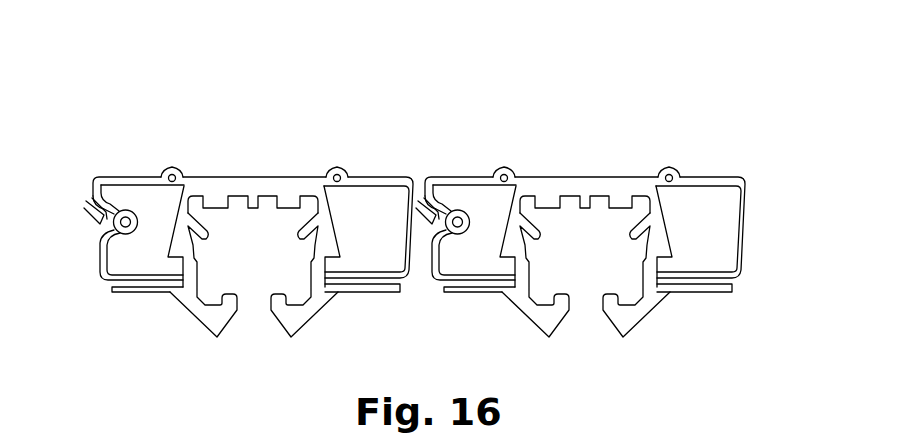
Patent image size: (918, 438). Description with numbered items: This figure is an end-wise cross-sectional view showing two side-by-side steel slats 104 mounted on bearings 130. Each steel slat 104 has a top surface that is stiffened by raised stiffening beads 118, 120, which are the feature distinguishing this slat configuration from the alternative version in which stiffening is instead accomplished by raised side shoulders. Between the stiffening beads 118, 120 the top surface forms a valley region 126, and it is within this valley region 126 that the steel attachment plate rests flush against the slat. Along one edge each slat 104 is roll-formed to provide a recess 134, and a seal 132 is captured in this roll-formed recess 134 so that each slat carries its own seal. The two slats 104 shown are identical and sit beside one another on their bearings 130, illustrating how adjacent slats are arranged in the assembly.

The steel slat 104 is at (270, 180).
The raised stiffening bead 118 is at (164, 170).
The raised stiffening bead 120 is at (343, 170).
The valley region 126 is at (211, 180).
The bearing 130 is at (306, 182).
The seal 132 is at (107, 220).
The roll-formed recess 134 is at (125, 226).